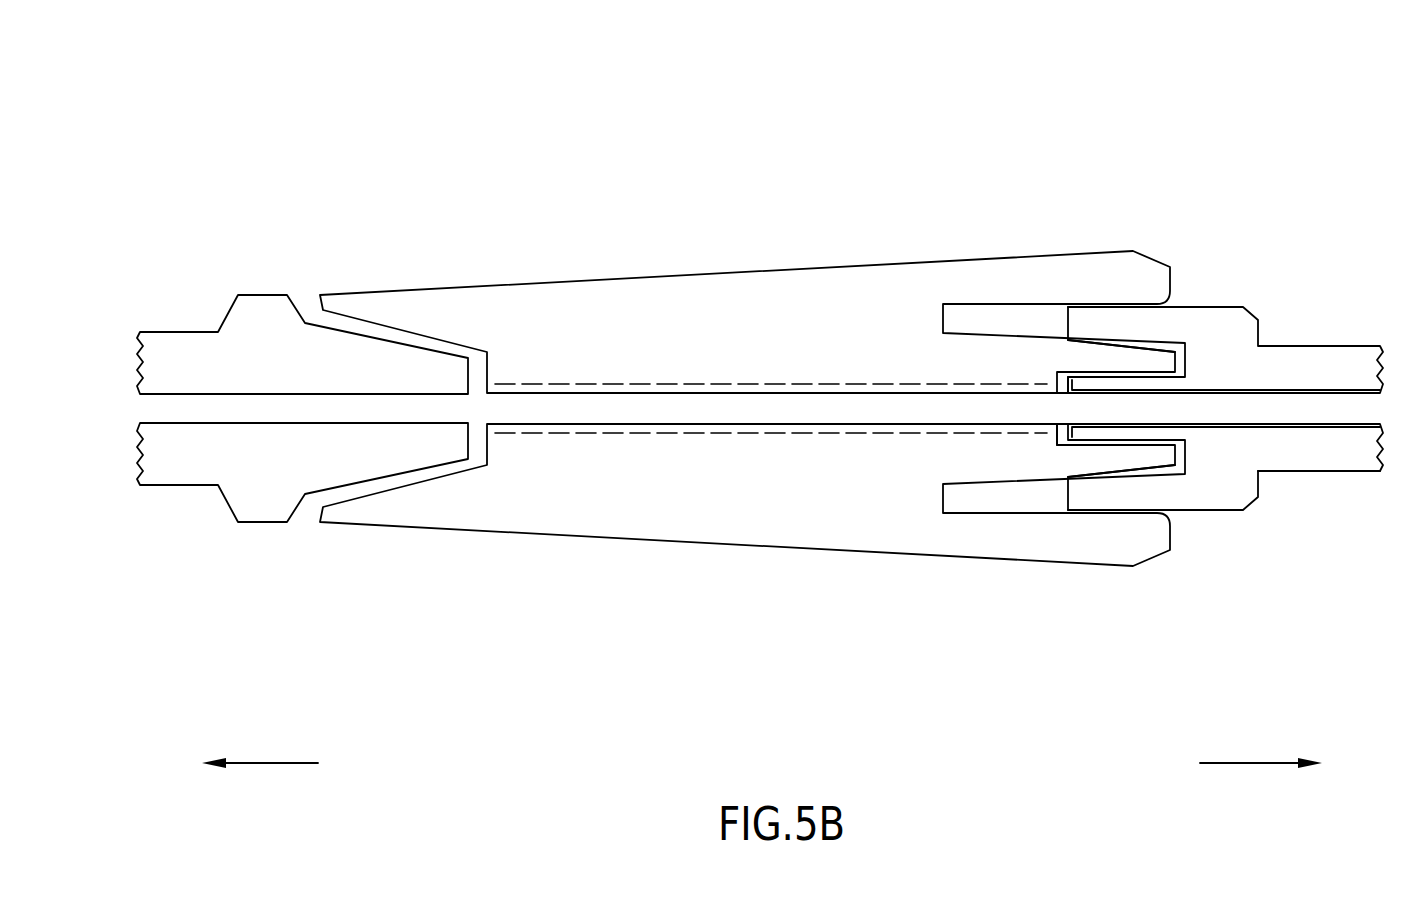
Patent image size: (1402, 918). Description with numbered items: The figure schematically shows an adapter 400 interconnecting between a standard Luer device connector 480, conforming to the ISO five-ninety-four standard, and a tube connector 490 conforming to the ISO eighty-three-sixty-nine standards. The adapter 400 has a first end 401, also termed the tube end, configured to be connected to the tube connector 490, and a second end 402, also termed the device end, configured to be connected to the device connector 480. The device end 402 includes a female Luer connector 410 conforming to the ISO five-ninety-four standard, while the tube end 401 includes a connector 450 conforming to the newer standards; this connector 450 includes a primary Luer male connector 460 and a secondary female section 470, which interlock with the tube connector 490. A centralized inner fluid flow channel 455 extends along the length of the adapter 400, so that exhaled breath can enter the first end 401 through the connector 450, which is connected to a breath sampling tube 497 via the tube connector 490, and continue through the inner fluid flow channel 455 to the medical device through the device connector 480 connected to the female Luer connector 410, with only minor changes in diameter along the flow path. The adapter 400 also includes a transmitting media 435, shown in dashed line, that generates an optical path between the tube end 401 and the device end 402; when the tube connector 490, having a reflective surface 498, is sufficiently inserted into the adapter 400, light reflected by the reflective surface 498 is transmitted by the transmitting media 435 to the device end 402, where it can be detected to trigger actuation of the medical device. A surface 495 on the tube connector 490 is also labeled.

The adapter 400 is at (722, 76).
The female Luer connector 410 is at (360, 190).
The device connector 480 is at (180, 308).
The connector 450 is at (1055, 206).
The tube connector 490 is at (1306, 310).
The reflective surface 498 is at (1066, 377).
The tapered engagement surface 495 is at (1122, 375).
The transmitting media 435 is at (726, 383).
The inner fluid flow channel 455 is at (849, 410).
The secondary female section 470 is at (1061, 430).
The primary Luer male connector 460 is at (1125, 458).
The breath sampling tube 497 is at (1312, 472).
The second end 402 is at (283, 762).
The first end 401 is at (1240, 762).